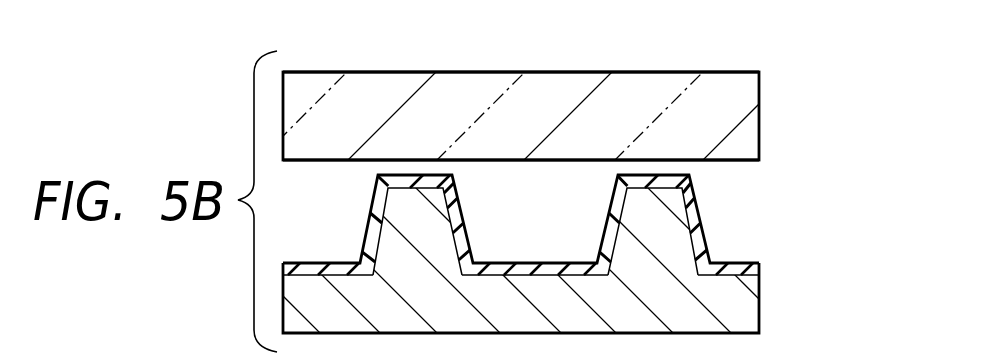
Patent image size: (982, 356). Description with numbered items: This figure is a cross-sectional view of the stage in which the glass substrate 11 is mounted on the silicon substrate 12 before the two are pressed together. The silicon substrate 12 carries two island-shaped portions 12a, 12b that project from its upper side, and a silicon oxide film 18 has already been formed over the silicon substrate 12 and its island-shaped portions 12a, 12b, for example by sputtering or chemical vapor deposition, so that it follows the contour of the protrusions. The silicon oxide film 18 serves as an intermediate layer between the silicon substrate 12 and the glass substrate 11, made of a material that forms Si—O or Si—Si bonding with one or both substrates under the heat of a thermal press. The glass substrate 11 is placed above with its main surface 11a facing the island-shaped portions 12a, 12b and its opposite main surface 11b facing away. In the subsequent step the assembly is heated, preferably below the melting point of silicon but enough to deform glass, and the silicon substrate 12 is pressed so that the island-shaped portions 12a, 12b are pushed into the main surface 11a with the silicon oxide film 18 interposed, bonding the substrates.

The glass substrate 11 is at (732, 112).
The main surface of the glass substrate 11a is at (733, 162).
The main surface of the glass substrate 11b is at (508, 72).
The silicon substrate 12 is at (740, 301).
The island-shaped portion 12a is at (428, 233).
The island-shaped portion 12b is at (676, 249).
The silicon oxide film 18 is at (377, 197).